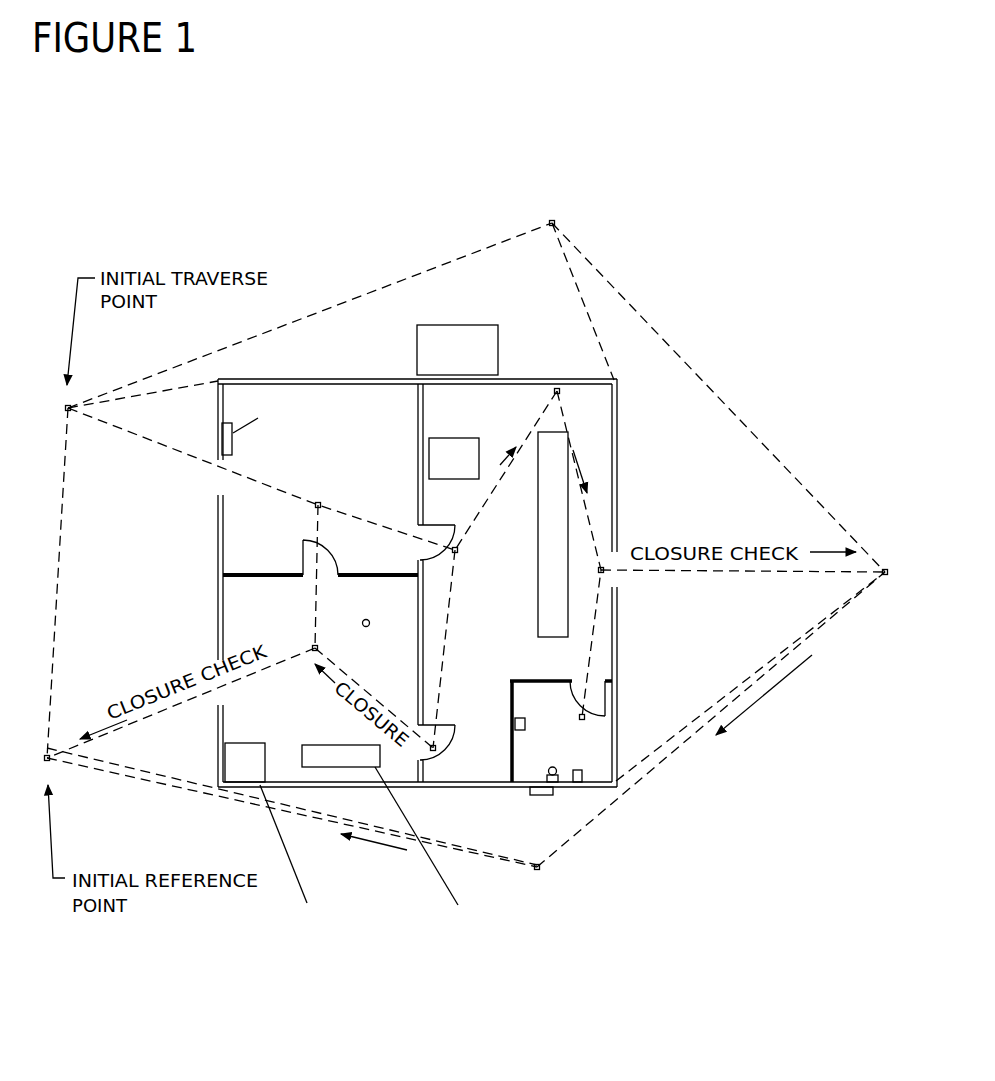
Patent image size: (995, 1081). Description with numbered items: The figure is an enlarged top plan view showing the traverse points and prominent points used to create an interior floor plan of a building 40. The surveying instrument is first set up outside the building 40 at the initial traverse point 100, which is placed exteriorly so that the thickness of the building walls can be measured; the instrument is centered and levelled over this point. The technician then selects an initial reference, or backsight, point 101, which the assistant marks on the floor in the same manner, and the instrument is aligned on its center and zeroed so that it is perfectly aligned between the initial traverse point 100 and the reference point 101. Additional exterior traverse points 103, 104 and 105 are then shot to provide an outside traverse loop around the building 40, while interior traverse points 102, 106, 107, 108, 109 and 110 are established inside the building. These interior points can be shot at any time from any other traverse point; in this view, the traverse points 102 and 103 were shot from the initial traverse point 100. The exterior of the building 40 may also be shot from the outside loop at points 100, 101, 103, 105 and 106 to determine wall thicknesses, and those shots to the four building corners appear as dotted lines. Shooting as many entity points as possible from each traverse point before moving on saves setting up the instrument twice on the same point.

The building 40 is at (616, 448).
The initial traverse point 100 is at (71, 412).
The initial reference point 101 is at (52, 757).
The interior traverse point 102 is at (320, 503).
The traverse point 103 is at (557, 223).
The traverse point 104 is at (884, 578).
The traverse point 105 is at (542, 867).
The interior traverse point 106 is at (320, 648).
The interior traverse point 107 is at (458, 553).
The interior traverse point 108 is at (436, 750).
The interior traverse point 109 is at (551, 392).
The interior traverse point 110 is at (604, 573).